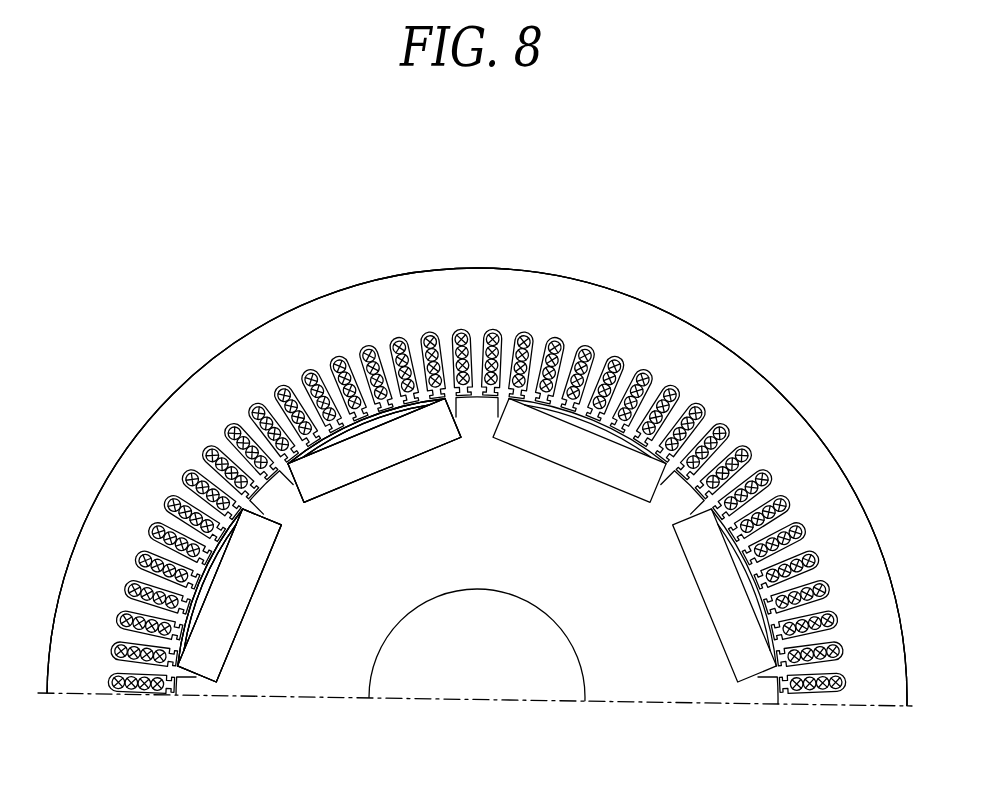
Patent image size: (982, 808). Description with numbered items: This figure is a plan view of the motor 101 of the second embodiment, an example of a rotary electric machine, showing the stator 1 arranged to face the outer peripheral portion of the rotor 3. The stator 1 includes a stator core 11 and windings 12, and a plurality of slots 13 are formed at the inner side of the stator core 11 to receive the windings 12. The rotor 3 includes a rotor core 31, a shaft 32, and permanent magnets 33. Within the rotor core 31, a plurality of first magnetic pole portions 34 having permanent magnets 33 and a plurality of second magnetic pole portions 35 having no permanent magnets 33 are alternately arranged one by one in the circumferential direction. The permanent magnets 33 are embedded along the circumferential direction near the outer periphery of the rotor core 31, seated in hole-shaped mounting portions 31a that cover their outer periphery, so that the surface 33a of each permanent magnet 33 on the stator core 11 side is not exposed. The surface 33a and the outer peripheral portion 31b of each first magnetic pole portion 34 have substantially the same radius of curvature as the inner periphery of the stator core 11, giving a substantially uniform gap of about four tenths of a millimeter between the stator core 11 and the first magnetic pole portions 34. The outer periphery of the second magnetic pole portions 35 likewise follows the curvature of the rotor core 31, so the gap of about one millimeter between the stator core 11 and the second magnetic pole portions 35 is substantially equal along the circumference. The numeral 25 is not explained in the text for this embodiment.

The motor 101 is at (627, 262).
The stator 1 is at (683, 342).
The stator core 11 is at (732, 375).
The windings 12 is at (722, 433).
The slots 13 is at (768, 482).
The rotor core protrusion 25 is at (473, 400).
The rotor 3 is at (633, 678).
The rotor core 31 is at (335, 683).
The mounting portions 31a is at (338, 488).
The outer peripheral portion 31b is at (330, 363).
The shaft 32 is at (478, 693).
The permanent magnets 33 is at (370, 470).
The surface 33a is at (379, 403).
The first magnetic pole portions 34 is at (403, 472).
The second magnetic pole portions 35 is at (272, 490).